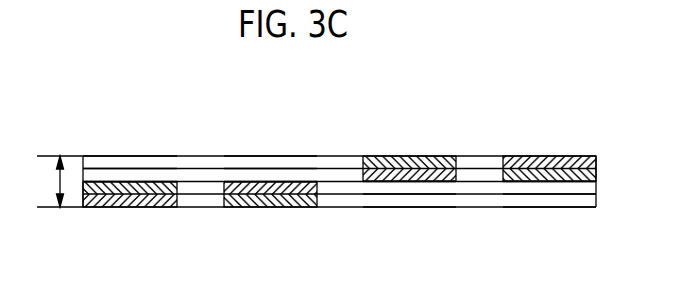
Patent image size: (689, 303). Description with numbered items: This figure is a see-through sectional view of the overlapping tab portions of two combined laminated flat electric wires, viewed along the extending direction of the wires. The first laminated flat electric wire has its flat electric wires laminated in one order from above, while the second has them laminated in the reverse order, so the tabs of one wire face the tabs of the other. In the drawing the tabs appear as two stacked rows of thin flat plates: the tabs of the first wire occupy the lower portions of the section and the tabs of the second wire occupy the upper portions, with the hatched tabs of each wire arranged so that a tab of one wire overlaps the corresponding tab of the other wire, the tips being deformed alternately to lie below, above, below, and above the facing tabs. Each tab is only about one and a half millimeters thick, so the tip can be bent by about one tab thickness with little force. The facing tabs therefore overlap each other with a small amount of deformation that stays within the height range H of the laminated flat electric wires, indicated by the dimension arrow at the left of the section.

The height range H is at (50, 181).